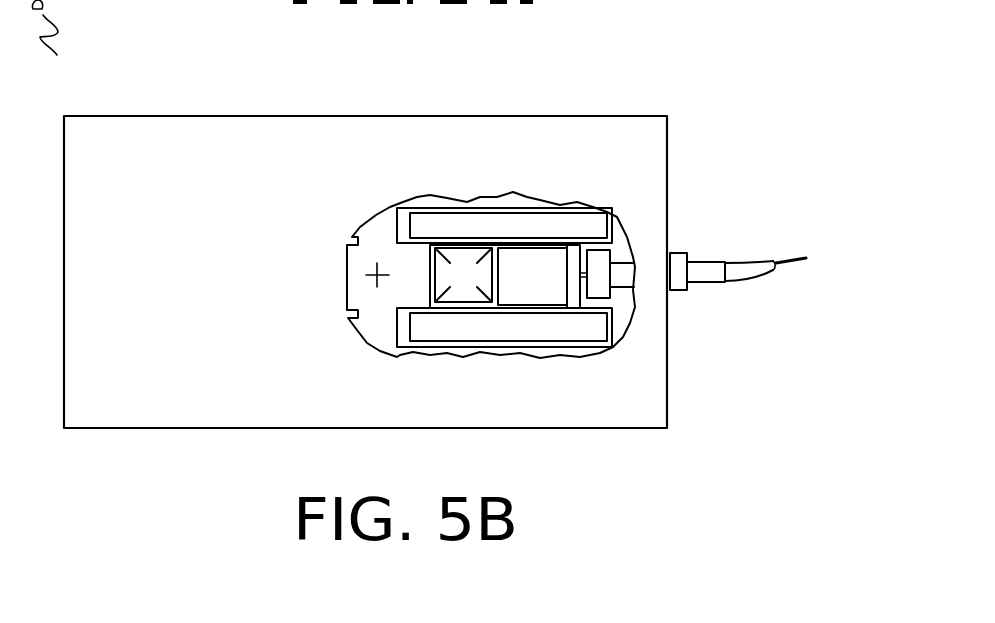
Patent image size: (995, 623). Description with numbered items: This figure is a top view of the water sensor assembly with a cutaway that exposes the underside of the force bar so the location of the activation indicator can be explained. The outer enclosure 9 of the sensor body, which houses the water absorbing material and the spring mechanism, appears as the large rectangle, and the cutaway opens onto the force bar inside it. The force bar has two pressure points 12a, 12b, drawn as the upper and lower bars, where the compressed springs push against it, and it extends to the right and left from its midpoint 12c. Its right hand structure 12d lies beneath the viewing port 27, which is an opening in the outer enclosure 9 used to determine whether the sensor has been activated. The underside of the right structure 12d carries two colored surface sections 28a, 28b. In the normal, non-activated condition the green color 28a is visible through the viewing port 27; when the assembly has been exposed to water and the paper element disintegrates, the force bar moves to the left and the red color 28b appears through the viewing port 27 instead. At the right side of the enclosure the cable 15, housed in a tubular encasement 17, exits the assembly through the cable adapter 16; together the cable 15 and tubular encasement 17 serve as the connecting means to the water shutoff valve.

The outer enclosure 9 is at (549, 136).
The force bar pressure point 12a is at (382, 223).
The force bar pressure point 12b is at (383, 335).
The midpoint of force bar 12c is at (390, 273).
The right hand structure of force bar 12d is at (407, 282).
The viewing port 27 is at (463, 277).
The green colored surface section 28a is at (462, 257).
The red colored surface section 28b is at (538, 258).
The cable adapter 16 is at (695, 265).
The tubular encasement 17 is at (745, 263).
The cable 15 is at (790, 263).